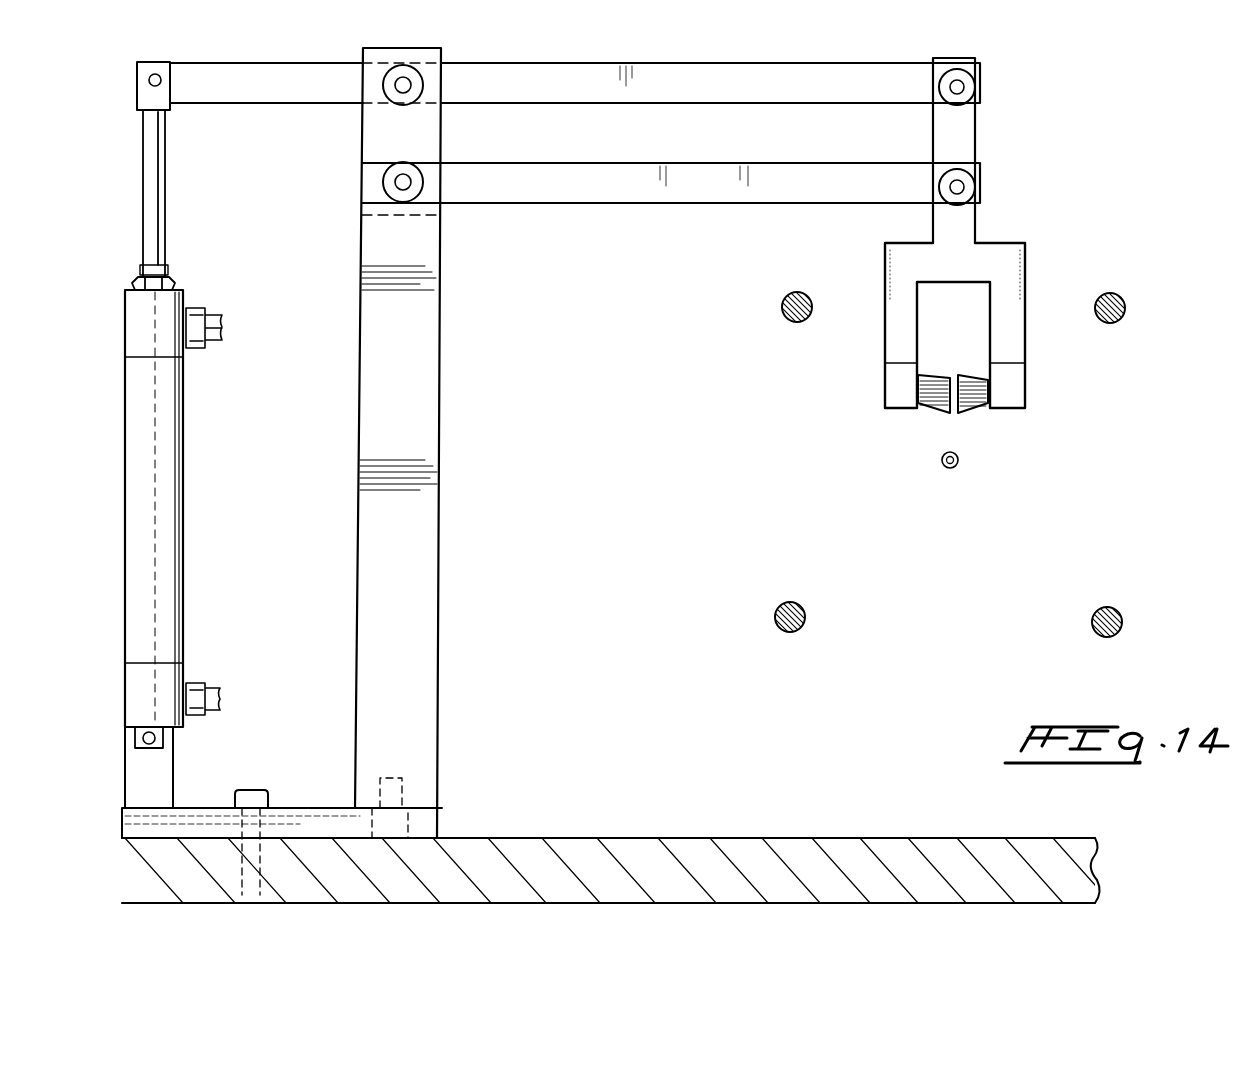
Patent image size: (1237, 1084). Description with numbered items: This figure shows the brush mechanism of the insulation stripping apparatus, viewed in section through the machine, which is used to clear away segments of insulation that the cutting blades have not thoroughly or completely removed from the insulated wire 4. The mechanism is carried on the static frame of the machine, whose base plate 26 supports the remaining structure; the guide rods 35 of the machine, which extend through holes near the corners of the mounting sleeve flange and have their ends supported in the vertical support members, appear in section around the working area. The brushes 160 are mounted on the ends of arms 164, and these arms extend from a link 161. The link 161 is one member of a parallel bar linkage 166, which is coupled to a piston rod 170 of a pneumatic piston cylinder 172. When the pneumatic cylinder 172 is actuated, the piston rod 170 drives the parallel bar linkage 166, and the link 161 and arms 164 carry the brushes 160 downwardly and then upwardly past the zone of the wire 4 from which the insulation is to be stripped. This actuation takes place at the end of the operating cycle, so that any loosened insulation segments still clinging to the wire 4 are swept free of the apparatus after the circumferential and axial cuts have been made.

The insulated wire 4 is at (958, 465).
The base plate 26 is at (590, 858).
The guide rods 35 is at (790, 312).
The brushes 160 is at (960, 413).
The link 161 is at (962, 145).
The arms 164 is at (1015, 272).
The parallel bar linkage 166 is at (575, 104).
The piston rod 170 is at (158, 197).
The cylinder 172 is at (168, 438).